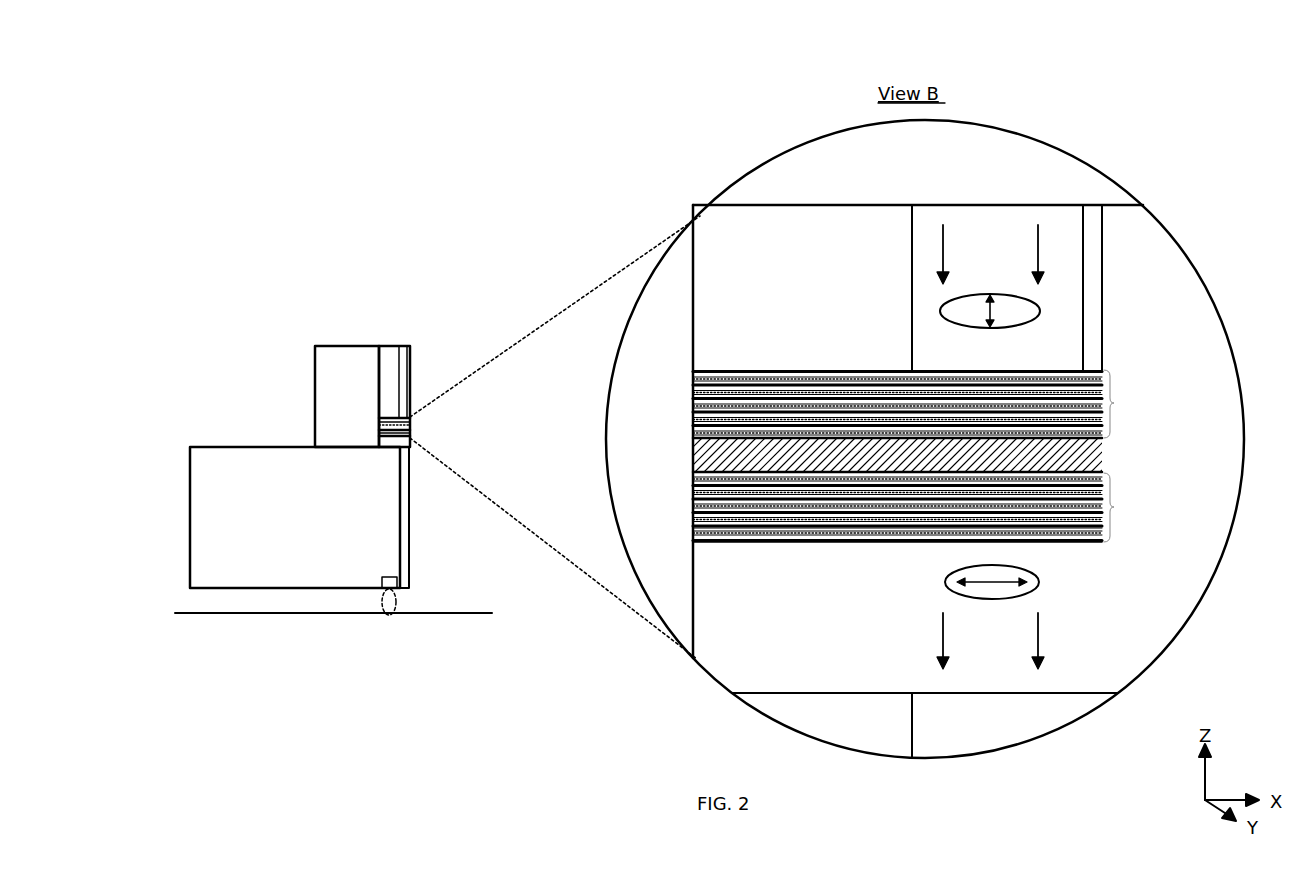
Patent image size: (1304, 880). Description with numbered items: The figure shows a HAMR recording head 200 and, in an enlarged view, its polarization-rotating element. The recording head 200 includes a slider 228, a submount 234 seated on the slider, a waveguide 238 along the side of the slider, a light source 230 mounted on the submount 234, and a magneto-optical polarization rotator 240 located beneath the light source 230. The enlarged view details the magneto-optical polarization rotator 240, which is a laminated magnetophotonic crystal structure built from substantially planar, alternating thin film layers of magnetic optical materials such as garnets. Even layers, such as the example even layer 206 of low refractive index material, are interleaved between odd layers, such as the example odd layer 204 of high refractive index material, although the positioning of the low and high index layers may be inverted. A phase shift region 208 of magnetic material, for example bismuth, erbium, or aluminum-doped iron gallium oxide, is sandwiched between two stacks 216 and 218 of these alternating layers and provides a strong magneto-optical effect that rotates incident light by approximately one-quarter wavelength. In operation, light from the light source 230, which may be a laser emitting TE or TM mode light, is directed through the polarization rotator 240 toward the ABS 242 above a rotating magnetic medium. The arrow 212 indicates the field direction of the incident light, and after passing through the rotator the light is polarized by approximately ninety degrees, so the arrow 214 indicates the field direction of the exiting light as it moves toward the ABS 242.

The HAMR recording head 200 is at (294, 134).
The odd layer 204 is at (722, 542).
The even layer 206 is at (693, 528).
The phase shift region 208 is at (693, 455).
The arrow 212 is at (1000, 328).
The arrow 214 is at (945, 582).
The stack 216 is at (1114, 403).
The stack 218 is at (1114, 507).
The slider 228 is at (235, 447).
The light source 230 is at (388, 347).
The submount 234 is at (315, 410).
The waveguide 238 is at (408, 508).
The magneto-optical polarization rotator 240 is at (412, 427).
The ABS 242 is at (216, 590).